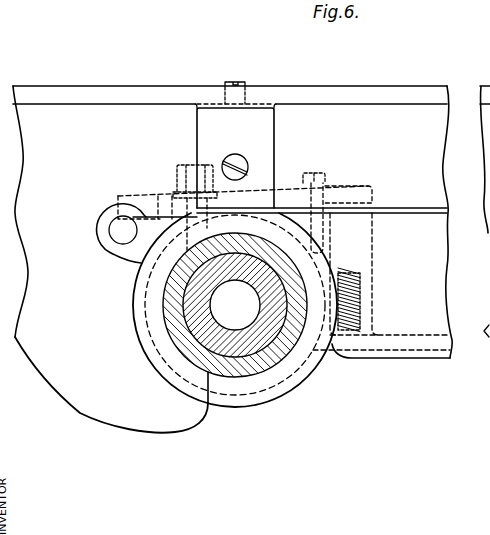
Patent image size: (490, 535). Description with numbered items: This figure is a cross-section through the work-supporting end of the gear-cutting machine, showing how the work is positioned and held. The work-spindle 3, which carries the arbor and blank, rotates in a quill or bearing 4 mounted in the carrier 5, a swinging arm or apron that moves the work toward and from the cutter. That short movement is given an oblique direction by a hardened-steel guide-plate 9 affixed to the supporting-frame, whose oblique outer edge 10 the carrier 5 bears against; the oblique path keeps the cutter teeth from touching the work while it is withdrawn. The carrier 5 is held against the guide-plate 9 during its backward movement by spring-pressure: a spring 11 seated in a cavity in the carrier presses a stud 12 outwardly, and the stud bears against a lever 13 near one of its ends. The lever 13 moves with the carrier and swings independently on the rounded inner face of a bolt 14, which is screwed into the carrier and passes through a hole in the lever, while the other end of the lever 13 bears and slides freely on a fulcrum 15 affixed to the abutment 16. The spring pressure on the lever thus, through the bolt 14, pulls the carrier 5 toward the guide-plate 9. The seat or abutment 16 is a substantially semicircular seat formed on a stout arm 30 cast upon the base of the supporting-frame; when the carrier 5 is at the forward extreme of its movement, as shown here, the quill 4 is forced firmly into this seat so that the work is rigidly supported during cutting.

The work-spindle 3 is at (242, 347).
The quill or bearing 4 is at (277, 370).
The carrier 5 is at (440, 310).
The guide-plate 9 is at (274, 152).
The oblique outer edge 10 is at (255, 198).
The spring 11 is at (370, 292).
The stud 12 is at (353, 240).
The lever 13 is at (143, 195).
The bolt 14 is at (188, 168).
The fulcrum 15 is at (115, 235).
The seat or abutment 16 is at (165, 307).
The stout arm 30 is at (143, 340).